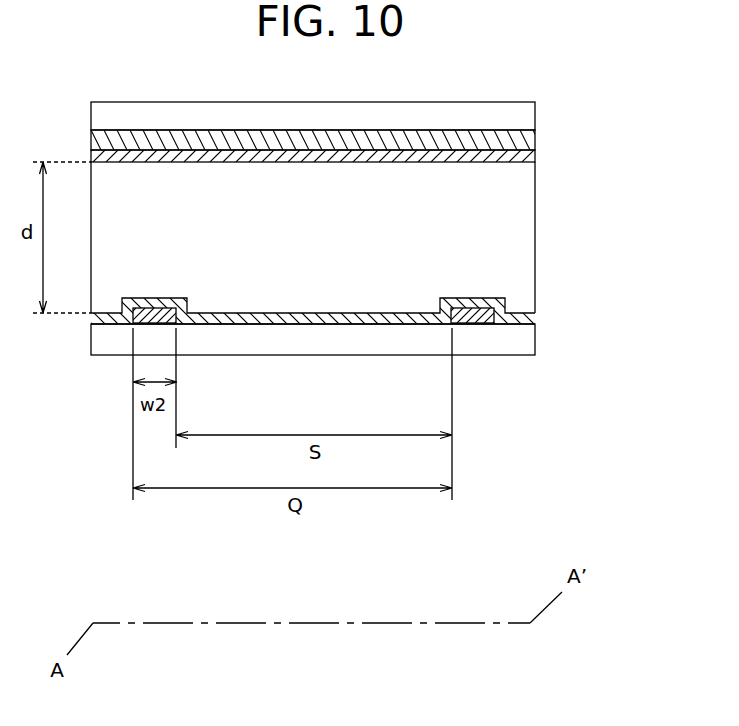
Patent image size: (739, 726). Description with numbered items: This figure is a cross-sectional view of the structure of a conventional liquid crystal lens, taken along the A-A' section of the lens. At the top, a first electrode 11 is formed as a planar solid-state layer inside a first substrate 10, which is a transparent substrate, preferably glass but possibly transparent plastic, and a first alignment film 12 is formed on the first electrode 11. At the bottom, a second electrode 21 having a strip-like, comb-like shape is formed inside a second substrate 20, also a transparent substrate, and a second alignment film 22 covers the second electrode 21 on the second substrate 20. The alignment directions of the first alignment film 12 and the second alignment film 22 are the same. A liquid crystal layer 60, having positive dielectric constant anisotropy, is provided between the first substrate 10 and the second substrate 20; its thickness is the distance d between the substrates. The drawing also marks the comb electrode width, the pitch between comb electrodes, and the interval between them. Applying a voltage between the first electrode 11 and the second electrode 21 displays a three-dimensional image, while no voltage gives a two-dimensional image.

The first substrate 10 is at (528, 113).
The first electrode 11 is at (528, 143).
The first alignment film 12 is at (530, 157).
The liquid crystal layer 60 is at (498, 225).
The second alignment film 22 is at (518, 312).
The second electrode 21 is at (473, 308).
The second substrate 20 is at (530, 340).